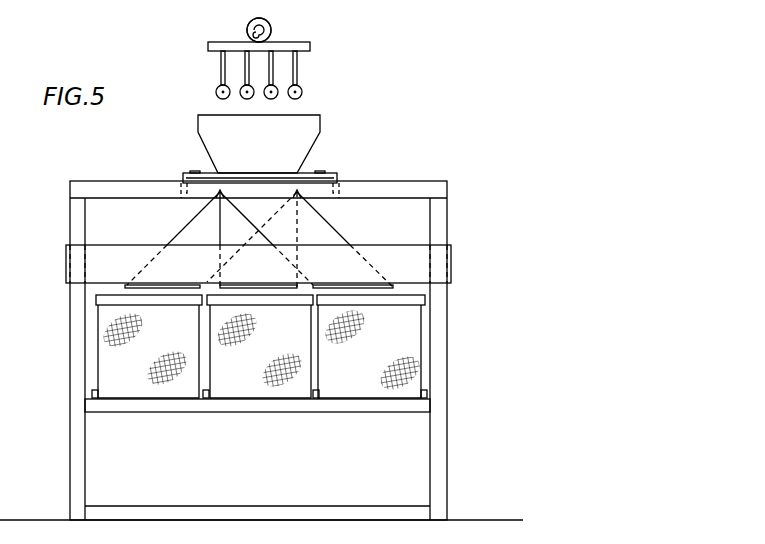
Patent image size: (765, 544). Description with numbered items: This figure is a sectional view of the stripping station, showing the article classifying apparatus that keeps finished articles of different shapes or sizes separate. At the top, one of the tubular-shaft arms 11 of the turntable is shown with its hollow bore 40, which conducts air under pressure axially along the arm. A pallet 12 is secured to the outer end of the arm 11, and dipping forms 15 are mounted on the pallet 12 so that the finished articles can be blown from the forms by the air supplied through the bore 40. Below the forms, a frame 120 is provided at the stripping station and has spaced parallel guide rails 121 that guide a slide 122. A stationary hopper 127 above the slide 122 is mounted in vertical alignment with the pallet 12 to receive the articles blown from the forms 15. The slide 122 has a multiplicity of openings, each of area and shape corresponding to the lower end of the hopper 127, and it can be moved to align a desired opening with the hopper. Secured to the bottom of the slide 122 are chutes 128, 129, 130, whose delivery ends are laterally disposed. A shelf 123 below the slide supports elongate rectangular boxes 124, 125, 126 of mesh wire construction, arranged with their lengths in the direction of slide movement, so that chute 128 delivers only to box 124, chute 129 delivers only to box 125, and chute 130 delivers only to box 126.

The arm 11 is at (270, 27).
The pallet 12 is at (307, 46).
The dipping form 15 is at (303, 91).
The hollow bore 40 is at (248, 24).
The frame 120 is at (448, 343).
The guide rail 121 is at (185, 172).
The slide 122 is at (251, 178).
The shelf 123 is at (228, 404).
The box 124 is at (145, 388).
The box 125 is at (263, 388).
The box 126 is at (360, 387).
The hopper 127 is at (322, 121).
The chute 128 is at (168, 243).
The chute 129 is at (218, 224).
The chute 130 is at (345, 236).